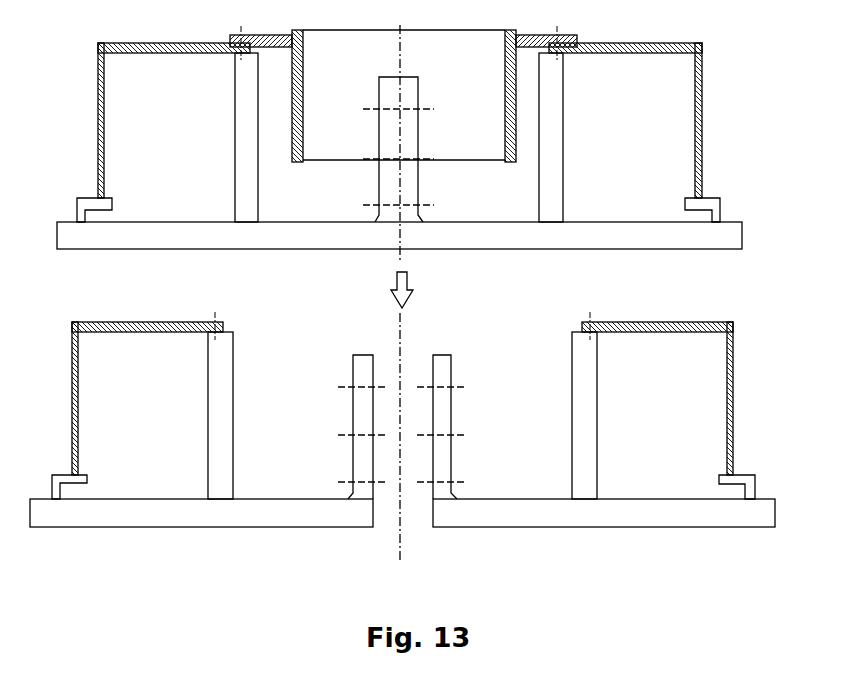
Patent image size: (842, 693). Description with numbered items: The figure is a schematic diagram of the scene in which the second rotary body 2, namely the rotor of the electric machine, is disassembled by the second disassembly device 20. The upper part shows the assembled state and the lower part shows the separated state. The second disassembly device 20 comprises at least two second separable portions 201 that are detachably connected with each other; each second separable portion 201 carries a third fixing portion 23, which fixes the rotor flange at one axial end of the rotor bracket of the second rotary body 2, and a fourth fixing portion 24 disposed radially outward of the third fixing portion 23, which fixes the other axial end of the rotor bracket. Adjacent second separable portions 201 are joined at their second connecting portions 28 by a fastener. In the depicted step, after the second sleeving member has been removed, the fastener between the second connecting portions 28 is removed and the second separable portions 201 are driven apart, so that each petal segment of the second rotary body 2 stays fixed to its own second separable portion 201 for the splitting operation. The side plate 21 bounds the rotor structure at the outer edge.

The second rotary body 2 is at (98, 115).
The second disassembly device 20 is at (365, 259).
The second separable portion 201 is at (243, 240).
The side plate 21 is at (702, 125).
The third fixing portion 23 is at (240, 72).
The fourth fixing portion 24 is at (108, 202).
The second connecting portion 28 is at (380, 145).